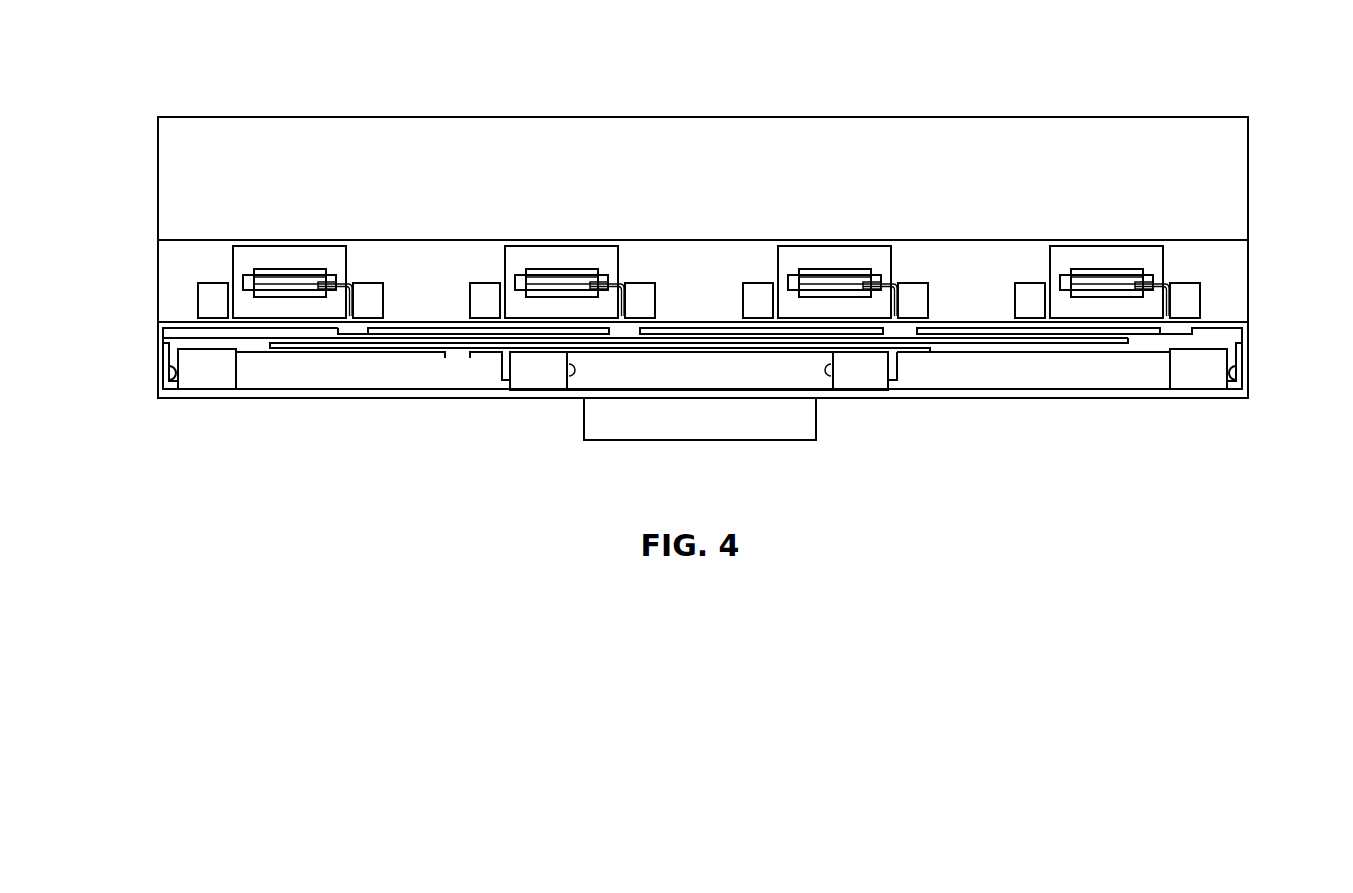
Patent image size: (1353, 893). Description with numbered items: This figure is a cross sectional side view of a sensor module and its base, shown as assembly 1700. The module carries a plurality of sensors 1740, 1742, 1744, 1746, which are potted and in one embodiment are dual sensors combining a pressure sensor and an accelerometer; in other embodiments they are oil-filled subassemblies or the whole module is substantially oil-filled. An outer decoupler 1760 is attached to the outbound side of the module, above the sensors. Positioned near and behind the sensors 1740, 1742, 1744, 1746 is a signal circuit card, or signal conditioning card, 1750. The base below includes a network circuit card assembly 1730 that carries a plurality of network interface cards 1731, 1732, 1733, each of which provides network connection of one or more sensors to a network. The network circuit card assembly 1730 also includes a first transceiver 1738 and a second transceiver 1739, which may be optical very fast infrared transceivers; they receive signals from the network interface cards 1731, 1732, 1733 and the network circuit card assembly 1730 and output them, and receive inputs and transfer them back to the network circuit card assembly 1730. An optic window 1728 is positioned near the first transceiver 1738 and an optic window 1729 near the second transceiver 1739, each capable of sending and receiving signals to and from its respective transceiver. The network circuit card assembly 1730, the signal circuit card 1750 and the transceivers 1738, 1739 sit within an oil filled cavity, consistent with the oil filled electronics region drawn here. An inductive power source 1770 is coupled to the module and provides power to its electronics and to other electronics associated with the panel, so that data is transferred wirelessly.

The sensor assembly 1700 is at (166, 56).
The sensor 1740 is at (262, 250).
The sensor 1742 is at (534, 252).
The sensor 1744 is at (808, 252).
The sensor 1746 is at (1112, 252).
The outer decoupler 1760 is at (1030, 133).
The optic window 1728 is at (168, 354).
The optic window 1729 is at (1237, 354).
The first transceiver 1738 is at (213, 373).
The second transceiver 1739 is at (1202, 381).
The network interface card 1731 is at (443, 352).
The network interface card 1732 is at (820, 353).
The signal circuit card 1750 is at (937, 352).
The network interface card 1733 is at (1010, 353).
The network circuit card assembly 1730 is at (1113, 350).
The inductive power source 1770 is at (645, 440).